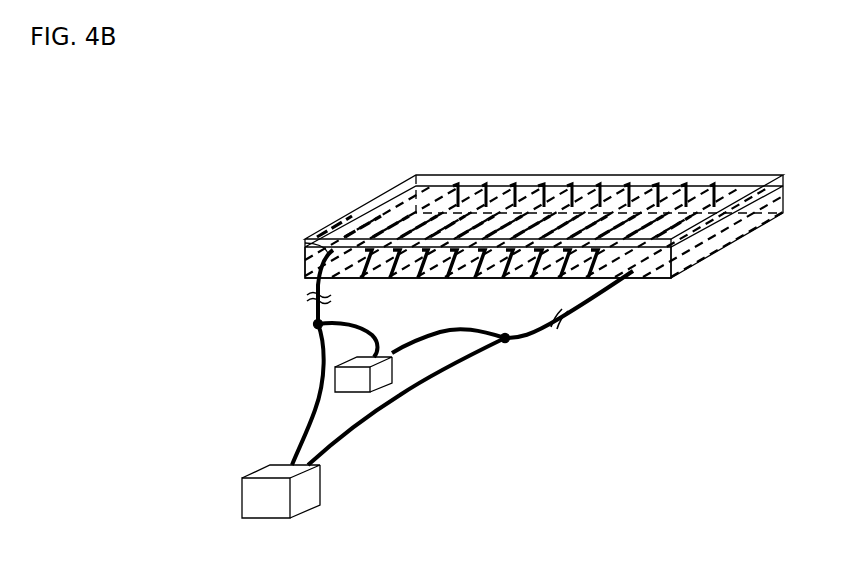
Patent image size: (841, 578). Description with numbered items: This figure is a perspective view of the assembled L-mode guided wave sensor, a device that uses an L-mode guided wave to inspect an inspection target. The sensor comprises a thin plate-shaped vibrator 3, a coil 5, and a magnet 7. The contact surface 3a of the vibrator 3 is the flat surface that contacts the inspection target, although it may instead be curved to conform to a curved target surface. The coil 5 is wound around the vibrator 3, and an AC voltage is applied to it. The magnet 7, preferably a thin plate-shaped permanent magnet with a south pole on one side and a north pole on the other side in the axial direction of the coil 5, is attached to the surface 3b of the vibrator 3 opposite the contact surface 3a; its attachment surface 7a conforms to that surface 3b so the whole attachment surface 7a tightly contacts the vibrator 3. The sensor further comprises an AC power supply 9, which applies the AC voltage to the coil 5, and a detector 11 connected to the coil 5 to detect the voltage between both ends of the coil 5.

The vibrator 3 is at (712, 243).
The contact surface 3a is at (640, 283).
The surface opposite to the contact surface 3b is at (305, 243).
The coil 5 is at (446, 270).
The magnet 7 is at (382, 195).
The attachment surface 7a is at (318, 258).
The AC power supply 9 is at (305, 488).
The detector 11 is at (383, 373).